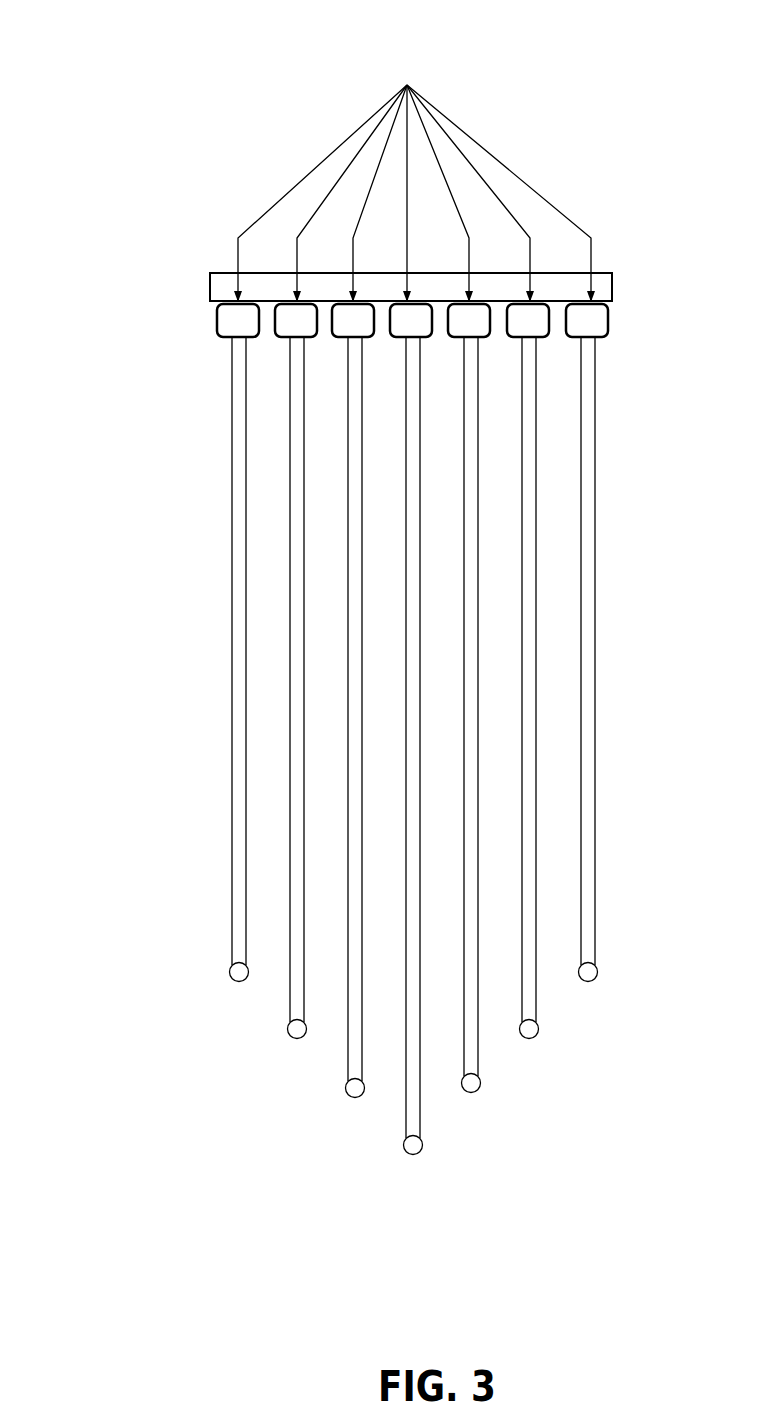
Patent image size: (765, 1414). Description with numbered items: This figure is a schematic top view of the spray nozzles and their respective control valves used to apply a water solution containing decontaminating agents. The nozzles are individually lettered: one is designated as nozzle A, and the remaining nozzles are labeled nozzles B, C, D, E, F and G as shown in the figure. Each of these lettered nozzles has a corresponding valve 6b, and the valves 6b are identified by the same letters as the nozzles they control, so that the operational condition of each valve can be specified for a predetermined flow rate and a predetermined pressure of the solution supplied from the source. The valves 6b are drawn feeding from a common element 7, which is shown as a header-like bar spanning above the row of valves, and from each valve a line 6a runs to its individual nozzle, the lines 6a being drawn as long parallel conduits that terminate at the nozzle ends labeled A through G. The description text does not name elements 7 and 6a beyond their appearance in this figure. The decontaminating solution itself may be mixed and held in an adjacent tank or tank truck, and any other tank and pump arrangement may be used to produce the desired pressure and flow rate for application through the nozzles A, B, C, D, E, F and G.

The valves 6b is at (407, 85).
The housing bar 7 is at (209, 286).
The optical fibers 6a is at (348, 820).
The nozzle A is at (413, 1157).
The nozzle B is at (355, 1100).
The nozzle C is at (471, 1095).
The nozzle D is at (297, 1041).
The nozzle E is at (529, 1041).
The nozzle F is at (239, 984).
The nozzle G is at (588, 984).